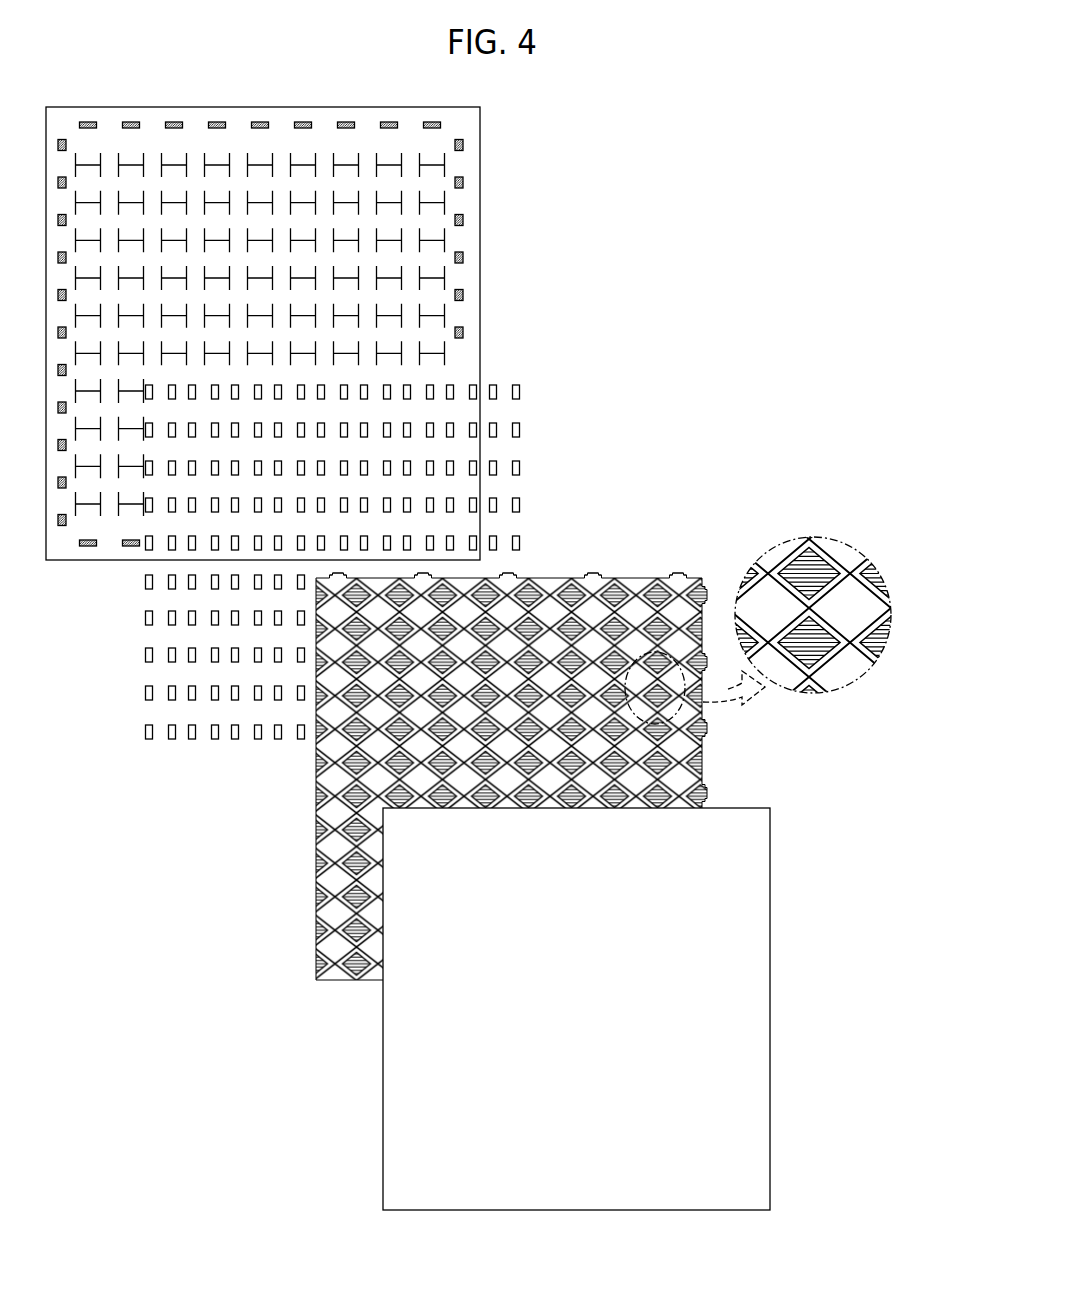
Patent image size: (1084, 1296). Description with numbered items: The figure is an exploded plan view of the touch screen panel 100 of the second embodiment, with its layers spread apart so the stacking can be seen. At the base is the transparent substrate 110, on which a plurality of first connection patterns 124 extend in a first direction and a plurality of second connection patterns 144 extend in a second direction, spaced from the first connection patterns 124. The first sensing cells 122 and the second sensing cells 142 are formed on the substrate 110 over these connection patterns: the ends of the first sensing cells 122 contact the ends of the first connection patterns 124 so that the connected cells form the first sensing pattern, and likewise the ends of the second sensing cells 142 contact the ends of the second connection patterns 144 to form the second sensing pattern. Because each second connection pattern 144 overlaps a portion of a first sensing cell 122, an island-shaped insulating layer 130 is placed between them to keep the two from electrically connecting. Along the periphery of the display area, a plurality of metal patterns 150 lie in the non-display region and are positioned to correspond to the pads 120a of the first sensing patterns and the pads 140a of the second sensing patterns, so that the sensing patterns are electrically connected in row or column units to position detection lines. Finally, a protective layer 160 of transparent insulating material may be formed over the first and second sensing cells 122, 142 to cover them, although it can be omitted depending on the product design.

The touch screen panel 100 is at (624, 146).
The transparent substrate 110 is at (482, 245).
The first connection patterns 124 is at (173, 165).
The second connection patterns 144 is at (165, 158).
The metal patterns 150 is at (430, 122).
The insulating layer 130 is at (527, 390).
The pads 120a is at (706, 592).
The pads 140a is at (590, 572).
The second sensing cells 142 is at (823, 555).
The first sensing cells 122 is at (867, 610).
The protective layer 160 is at (772, 866).